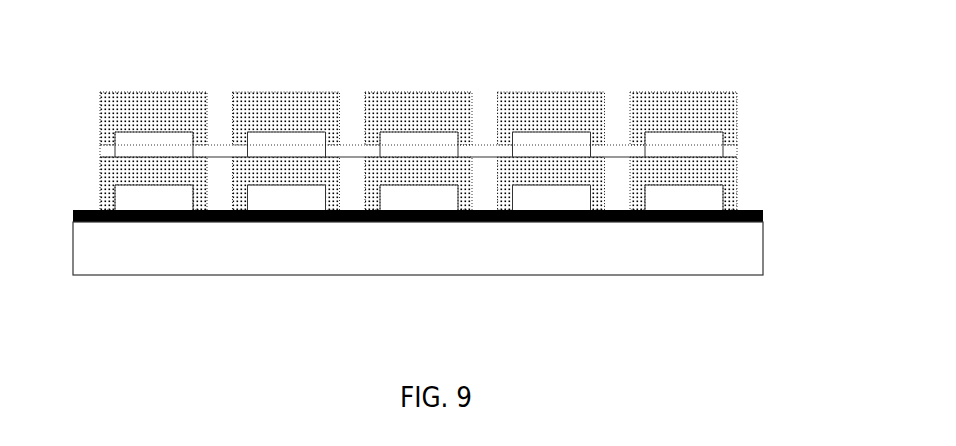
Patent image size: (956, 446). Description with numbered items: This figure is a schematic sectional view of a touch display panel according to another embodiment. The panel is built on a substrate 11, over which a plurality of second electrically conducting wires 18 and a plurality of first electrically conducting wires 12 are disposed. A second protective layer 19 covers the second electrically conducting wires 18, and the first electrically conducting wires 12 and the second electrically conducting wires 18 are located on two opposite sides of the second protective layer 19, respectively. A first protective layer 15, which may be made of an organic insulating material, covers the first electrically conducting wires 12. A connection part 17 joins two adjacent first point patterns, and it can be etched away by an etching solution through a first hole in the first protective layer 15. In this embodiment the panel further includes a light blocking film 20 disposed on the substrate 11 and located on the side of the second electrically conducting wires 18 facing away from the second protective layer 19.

The substrate 11 is at (550, 247).
The first electrically conducting wires 12 is at (708, 145).
The first protective layer 15 is at (720, 105).
The connection part 17 is at (622, 152).
The second electrically conducting wires 18 is at (682, 195).
The second protective layer 19 is at (720, 168).
The light blocking film 20 is at (83, 208).